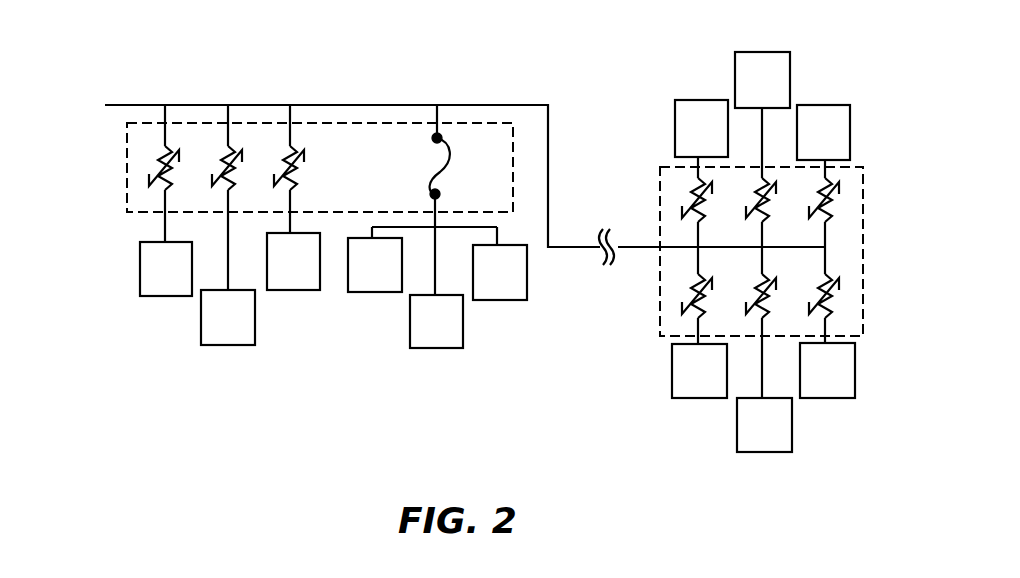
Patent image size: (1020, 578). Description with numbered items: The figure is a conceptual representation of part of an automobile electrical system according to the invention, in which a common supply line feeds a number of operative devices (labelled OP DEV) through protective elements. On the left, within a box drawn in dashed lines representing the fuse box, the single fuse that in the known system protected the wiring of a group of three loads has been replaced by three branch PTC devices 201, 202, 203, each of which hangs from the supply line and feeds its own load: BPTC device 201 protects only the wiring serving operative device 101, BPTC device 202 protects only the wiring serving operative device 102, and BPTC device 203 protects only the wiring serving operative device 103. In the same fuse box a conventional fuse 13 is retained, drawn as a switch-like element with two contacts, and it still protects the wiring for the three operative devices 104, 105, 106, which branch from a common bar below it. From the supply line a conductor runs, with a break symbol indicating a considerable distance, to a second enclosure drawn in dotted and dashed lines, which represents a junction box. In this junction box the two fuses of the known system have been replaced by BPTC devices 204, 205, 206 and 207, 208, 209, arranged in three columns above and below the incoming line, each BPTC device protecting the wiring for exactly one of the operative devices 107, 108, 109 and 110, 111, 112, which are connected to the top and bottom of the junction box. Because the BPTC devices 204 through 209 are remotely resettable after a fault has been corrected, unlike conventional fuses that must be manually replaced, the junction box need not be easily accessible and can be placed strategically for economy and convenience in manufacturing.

The fuse 13 is at (456, 140).
The operative device 101 is at (153, 297).
The operative device 102 is at (223, 346).
The operative device 103 is at (285, 291).
The operative device 104 is at (354, 292).
The operative device 105 is at (440, 348).
The operative device 106 is at (498, 300).
The operative device 107 is at (692, 398).
The operative device 108 is at (770, 452).
The operative device 109 is at (826, 398).
The operative device 110 is at (850, 135).
The operative device 111 is at (760, 52).
The operative device 112 is at (675, 128).
The branch PTC device 201 is at (160, 150).
The branch PTC device 202 is at (232, 148).
The branch PTC device 203 is at (296, 150).
The branch PTC device 204 is at (698, 300).
The branch PTC device 205 is at (766, 278).
The branch PTC device 206 is at (824, 310).
The branch PTC device 207 is at (702, 181).
The branch PTC device 208 is at (772, 180).
The branch PTC device 209 is at (832, 214).